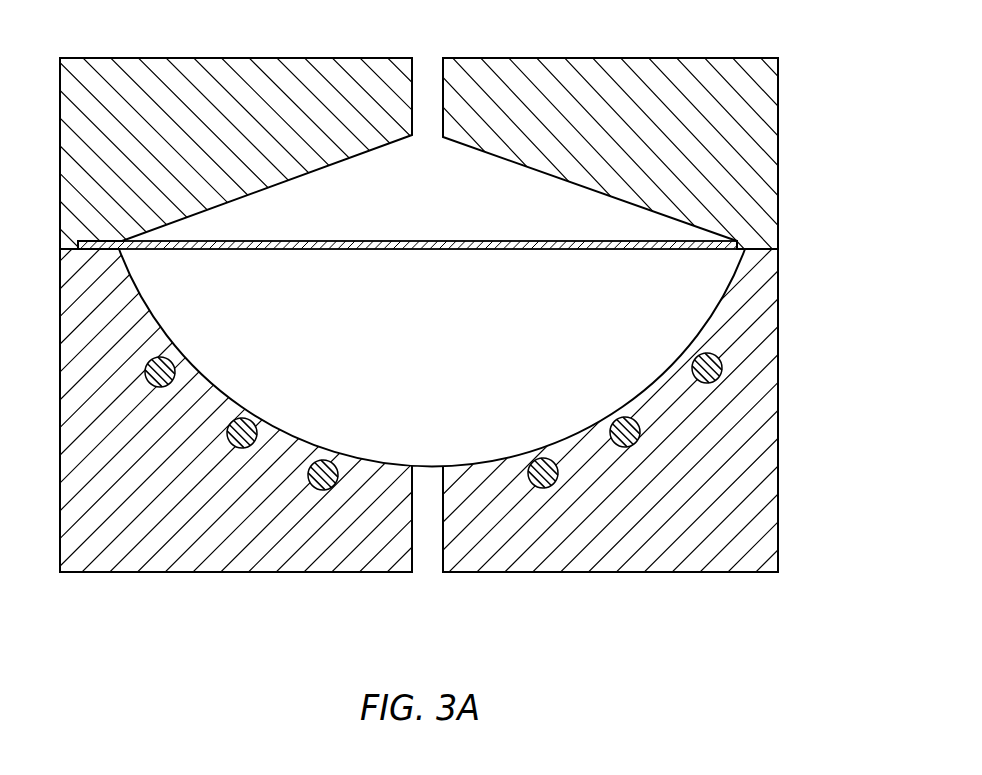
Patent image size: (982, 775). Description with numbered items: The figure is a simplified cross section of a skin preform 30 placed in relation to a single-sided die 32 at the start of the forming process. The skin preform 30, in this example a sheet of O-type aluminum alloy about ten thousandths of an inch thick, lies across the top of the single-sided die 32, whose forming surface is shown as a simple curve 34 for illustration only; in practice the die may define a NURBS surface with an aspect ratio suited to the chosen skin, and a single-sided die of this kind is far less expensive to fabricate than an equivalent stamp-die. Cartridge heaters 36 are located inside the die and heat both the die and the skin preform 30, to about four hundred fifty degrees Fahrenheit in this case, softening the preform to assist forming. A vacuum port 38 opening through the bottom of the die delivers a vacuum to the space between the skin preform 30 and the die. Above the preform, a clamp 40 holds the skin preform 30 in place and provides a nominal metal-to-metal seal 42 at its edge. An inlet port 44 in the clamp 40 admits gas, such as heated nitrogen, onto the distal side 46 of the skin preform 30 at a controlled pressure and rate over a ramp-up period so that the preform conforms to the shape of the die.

The skin preform 30 is at (491, 387).
The single-sided die 32 is at (778, 368).
The simple curve 34 is at (247, 414).
The cartridge heaters 36 is at (170, 354).
The vacuum port 38 is at (430, 572).
The clamp 40 is at (778, 135).
The metal-to-metal seal 42 is at (100, 241).
The inlet port 44 is at (430, 135).
The distal side 46 is at (343, 241).